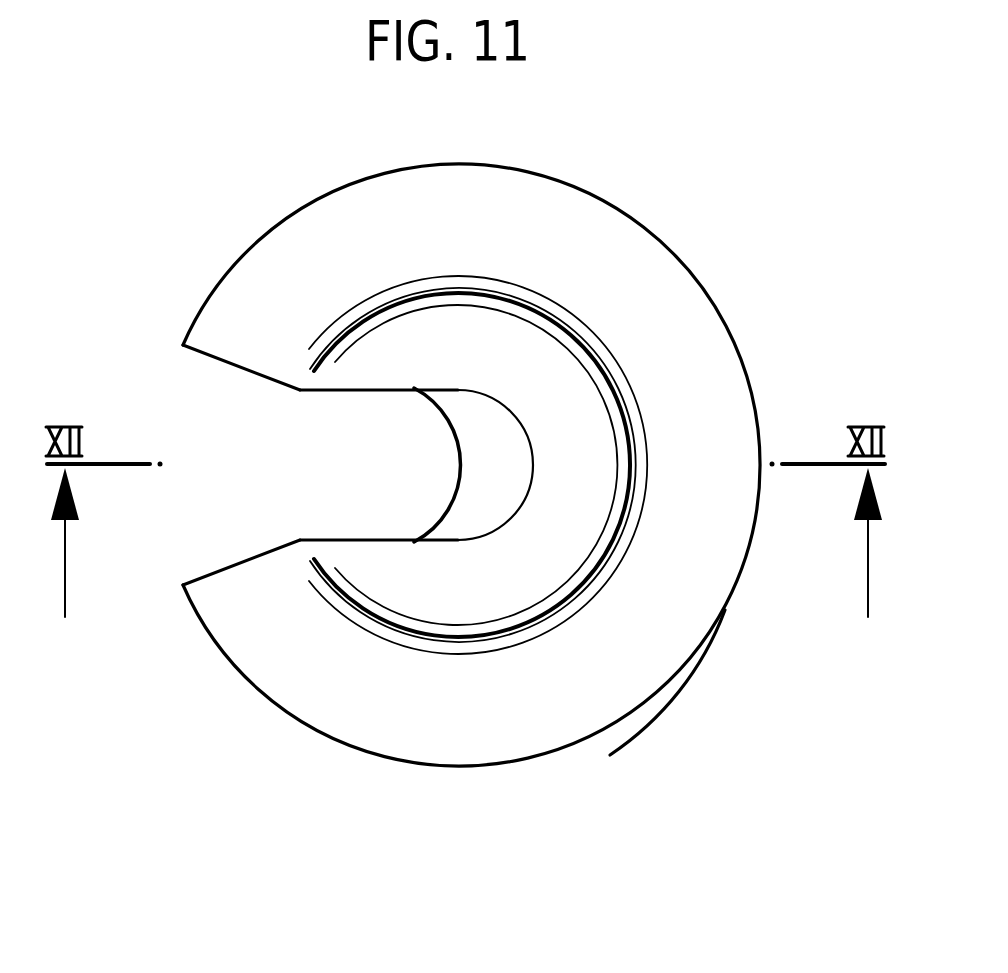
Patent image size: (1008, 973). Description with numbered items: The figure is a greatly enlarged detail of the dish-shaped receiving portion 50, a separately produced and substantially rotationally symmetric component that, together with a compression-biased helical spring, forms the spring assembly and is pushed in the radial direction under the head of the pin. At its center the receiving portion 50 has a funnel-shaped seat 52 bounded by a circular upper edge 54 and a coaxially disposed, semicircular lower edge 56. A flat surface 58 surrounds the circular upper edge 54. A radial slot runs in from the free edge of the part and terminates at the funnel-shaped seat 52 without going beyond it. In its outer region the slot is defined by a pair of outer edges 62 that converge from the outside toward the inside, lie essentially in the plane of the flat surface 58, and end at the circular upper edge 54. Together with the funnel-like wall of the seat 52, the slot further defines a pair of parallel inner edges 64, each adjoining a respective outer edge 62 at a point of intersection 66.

The receiving portion 50 is at (607, 186).
The funnel-shaped seat 52 is at (580, 378).
The circular upper edge 54 is at (618, 542).
The semicircular lower edge 56 is at (520, 510).
The flat surface 58 is at (612, 680).
The outer edges 62 is at (212, 365).
The inner edges 64 is at (357, 392).
The point of intersection 66 is at (306, 392).